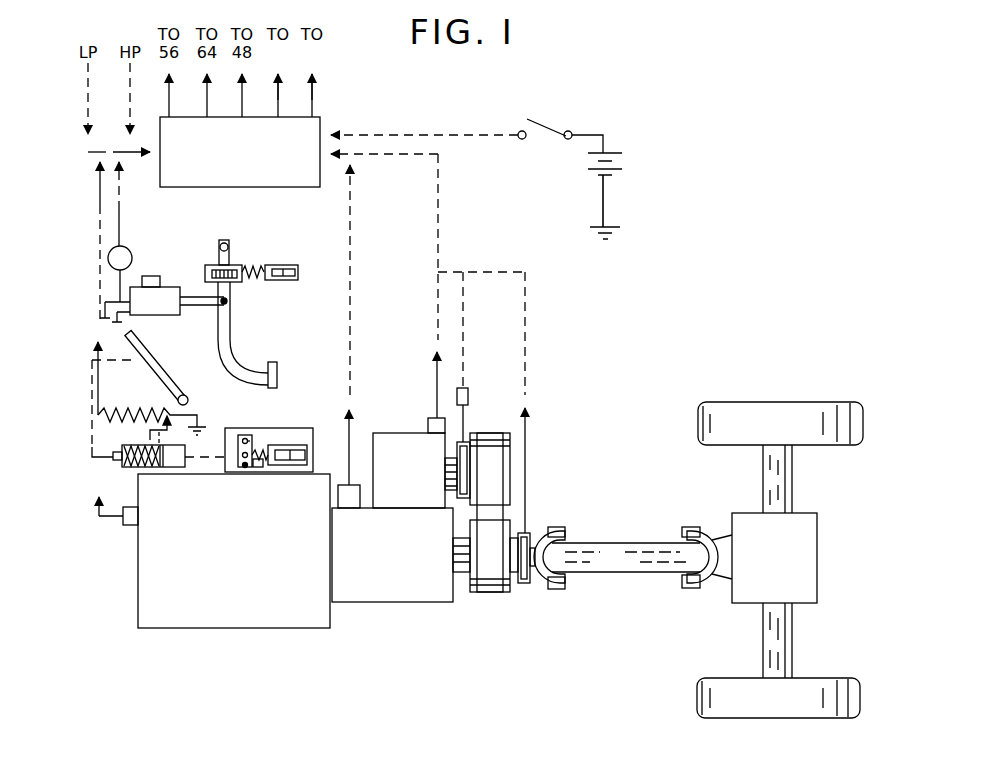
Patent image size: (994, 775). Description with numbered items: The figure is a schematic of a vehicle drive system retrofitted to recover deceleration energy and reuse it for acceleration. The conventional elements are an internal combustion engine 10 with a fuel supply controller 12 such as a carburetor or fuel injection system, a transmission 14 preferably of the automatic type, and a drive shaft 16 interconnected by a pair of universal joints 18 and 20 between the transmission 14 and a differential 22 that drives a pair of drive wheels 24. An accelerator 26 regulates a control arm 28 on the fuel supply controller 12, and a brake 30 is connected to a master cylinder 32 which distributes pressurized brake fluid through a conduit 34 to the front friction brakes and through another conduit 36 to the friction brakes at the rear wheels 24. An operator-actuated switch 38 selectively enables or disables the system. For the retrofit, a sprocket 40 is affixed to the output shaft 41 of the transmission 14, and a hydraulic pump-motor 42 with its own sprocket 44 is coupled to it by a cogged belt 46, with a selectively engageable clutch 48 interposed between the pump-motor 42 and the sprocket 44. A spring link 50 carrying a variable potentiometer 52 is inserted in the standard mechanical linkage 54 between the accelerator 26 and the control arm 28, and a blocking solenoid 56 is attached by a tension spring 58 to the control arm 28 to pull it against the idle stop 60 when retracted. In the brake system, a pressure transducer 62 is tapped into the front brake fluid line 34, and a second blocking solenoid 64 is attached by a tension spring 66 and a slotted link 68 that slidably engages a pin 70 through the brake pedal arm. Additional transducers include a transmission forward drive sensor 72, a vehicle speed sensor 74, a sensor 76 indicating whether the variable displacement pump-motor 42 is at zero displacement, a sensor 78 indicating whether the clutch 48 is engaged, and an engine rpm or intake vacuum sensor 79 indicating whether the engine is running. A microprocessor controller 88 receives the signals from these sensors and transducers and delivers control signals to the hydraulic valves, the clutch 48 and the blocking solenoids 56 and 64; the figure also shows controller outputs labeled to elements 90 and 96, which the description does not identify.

The internal combustion engine 10 is at (138, 598).
The fuel supply controller 12 is at (292, 428).
The transmission 14 is at (396, 604).
The drive shaft 16 is at (618, 542).
The universal joint 18 is at (556, 527).
The universal joint 20 is at (690, 527).
The differential 22 is at (818, 552).
The drive wheels 24 is at (765, 402).
The accelerator 26 is at (158, 378).
The control arm 28 is at (243, 470).
The brake 30 is at (236, 352).
The master cylinder 32 is at (172, 285).
The conduit 34 is at (100, 304).
The conduit 36 is at (100, 322).
The operator-actuated switch 38 is at (538, 122).
The sprocket 40 is at (500, 593).
The output shaft 41 is at (462, 593).
The hydraulic pump-motor 42 is at (396, 433).
The sprocket 44 is at (511, 452).
The cogged belt 46 is at (492, 482).
The clutch 48 is at (470, 440).
The spring link 50 is at (130, 445).
The variable potentiometer 52 is at (138, 405).
The mechanical linkage 54 is at (92, 447).
The blocking solenoid 56 is at (292, 468).
The tension spring 58 is at (250, 436).
The idle stop 60 is at (262, 470).
The pressure transducer 62 is at (128, 248).
The blocking solenoid 64 is at (285, 265).
The tension spring 66 is at (252, 268).
The slotted link 68 is at (230, 262).
The pin 70 is at (228, 297).
The transmission forward drive sensor 72 is at (345, 484).
The vehicle speed sensor 74 is at (524, 586).
The sensor 76 is at (430, 416).
The sensor 78 is at (466, 386).
The engine rpm or intake vacuum sensor 79 is at (126, 527).
The microprocessor controller 88 is at (322, 120).
The output device 90 is at (278, 71).
The output device 96 is at (312, 71).